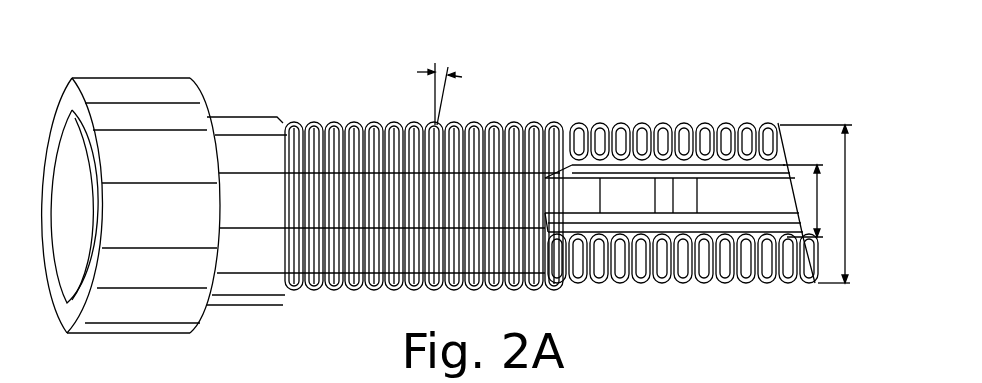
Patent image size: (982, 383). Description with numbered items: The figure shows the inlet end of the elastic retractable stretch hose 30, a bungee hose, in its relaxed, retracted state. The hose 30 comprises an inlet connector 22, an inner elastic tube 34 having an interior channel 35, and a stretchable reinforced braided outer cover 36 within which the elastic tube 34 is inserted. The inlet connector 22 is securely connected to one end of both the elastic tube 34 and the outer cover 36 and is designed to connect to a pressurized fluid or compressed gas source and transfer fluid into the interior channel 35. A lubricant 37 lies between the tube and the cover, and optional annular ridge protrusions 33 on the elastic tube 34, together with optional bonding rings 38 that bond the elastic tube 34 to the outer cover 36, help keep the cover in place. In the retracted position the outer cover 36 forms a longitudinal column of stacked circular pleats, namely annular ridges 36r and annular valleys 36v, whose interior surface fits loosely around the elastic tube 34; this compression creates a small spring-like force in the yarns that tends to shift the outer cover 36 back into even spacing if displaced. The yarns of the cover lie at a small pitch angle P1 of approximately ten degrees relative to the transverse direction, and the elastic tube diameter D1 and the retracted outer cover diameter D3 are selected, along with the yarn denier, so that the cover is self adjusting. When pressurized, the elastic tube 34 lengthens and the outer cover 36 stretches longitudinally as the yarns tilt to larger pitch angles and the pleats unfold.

The inlet connector 22 is at (165, 78).
The elastic retractable stretch hose 30 is at (692, 105).
The annular ridge protrusions 33 is at (698, 127).
The inner elastic tube 34 is at (590, 125).
The interior channel 35 is at (580, 220).
The outer cover 36 is at (352, 125).
The annular ridges 36r is at (337, 125).
The annular valleys 36v is at (643, 125).
The lubricant 37 is at (710, 227).
The bonding rings 38 is at (632, 246).
The pitch angle P1 is at (460, 77).
The elastic tube diameter D1 is at (818, 197).
The retracted outer cover diameter D3 is at (850, 245).